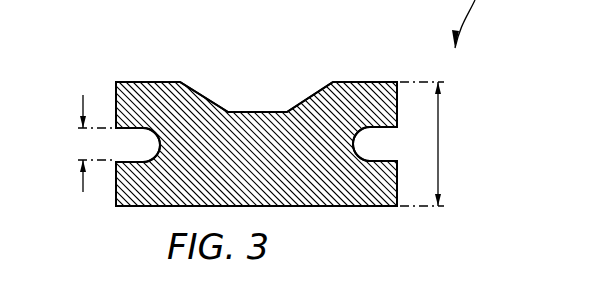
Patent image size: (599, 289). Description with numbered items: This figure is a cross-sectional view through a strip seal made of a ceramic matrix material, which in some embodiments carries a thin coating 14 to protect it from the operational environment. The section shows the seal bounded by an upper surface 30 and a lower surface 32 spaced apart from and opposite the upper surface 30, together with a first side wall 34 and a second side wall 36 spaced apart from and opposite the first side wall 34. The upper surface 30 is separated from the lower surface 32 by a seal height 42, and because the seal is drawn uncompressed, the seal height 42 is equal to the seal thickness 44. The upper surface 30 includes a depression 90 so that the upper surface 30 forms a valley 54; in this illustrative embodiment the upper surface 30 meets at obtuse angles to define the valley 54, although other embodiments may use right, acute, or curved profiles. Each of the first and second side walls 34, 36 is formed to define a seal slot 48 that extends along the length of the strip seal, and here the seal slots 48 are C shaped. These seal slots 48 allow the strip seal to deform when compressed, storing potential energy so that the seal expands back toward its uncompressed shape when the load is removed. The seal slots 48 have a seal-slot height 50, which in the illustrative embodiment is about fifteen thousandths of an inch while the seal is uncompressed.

The coating 14 is at (137, 82).
The upper surface 30 is at (347, 82).
The lower surface 32 is at (353, 206).
The first side wall 34 is at (116, 98).
The second side wall 36 is at (397, 95).
The seal height 42 is at (438, 163).
The seal thickness 44 is at (438, 113).
The seal slot 48 is at (135, 157).
The seal-slot height 50 is at (83, 95).
The valley 54 is at (265, 80).
The depression 90 is at (220, 98).